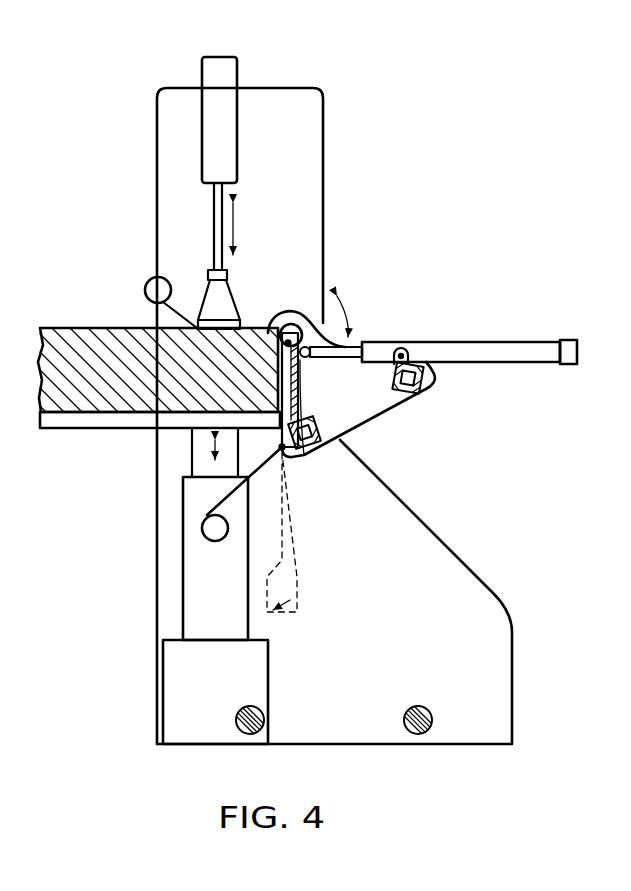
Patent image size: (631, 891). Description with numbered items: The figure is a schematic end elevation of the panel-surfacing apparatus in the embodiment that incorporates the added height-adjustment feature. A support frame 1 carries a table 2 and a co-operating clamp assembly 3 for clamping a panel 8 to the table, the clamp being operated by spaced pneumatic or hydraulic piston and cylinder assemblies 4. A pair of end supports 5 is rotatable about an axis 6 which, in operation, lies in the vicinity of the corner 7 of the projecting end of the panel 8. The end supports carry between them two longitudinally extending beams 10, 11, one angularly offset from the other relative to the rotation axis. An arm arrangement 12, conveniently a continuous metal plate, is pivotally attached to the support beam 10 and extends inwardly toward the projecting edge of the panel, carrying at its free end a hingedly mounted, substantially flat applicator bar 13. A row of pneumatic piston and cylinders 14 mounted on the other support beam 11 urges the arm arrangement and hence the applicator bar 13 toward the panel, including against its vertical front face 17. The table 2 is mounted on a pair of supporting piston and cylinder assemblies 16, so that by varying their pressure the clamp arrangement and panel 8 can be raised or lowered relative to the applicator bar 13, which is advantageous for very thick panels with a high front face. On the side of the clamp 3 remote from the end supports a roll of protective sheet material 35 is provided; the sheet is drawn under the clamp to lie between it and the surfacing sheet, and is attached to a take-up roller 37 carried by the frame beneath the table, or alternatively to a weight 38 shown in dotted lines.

The support frame 1 is at (143, 183).
The table 2 is at (160, 425).
The clamp assembly 3 is at (227, 287).
The piston and cylinder assemblies 4 is at (228, 130).
The end supports 5 is at (390, 397).
The axis 6 is at (298, 310).
The corner 7 is at (253, 327).
The panel 8 is at (80, 327).
The support beam 10 is at (308, 393).
The support beam 11 is at (430, 360).
The arm arrangement 12 is at (331, 433).
The applicator bar 13 is at (300, 360).
The pneumatic piston and cylinders 14 is at (493, 353).
The supporting piston and cylinder assemblies 16 is at (192, 483).
The vertical front face 17 is at (305, 372).
The roll of protective sheet material 35 is at (147, 278).
The take-up roller 37 is at (208, 533).
The weight 38 is at (297, 605).